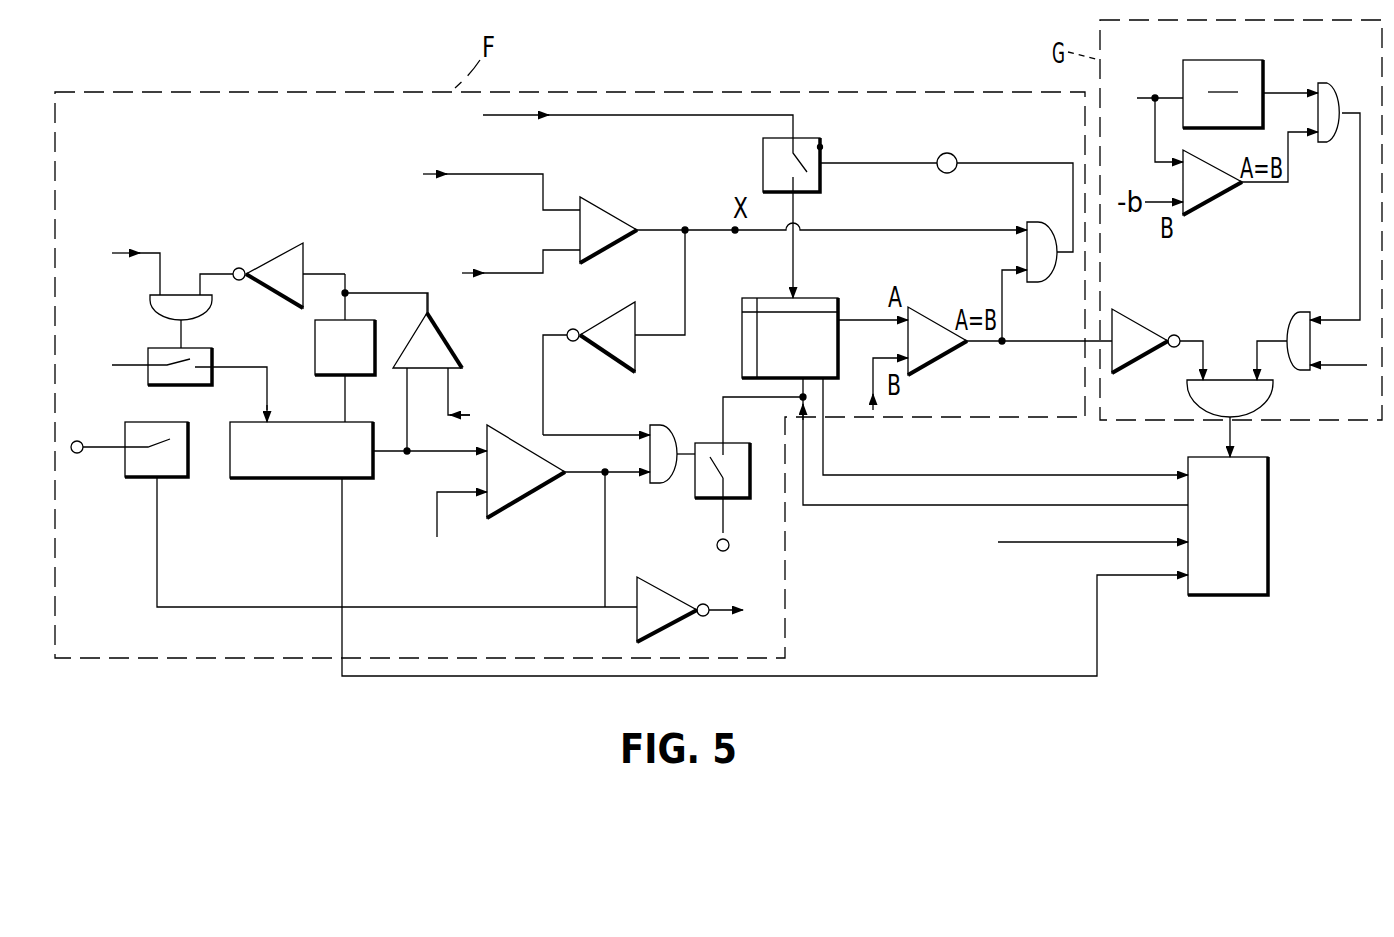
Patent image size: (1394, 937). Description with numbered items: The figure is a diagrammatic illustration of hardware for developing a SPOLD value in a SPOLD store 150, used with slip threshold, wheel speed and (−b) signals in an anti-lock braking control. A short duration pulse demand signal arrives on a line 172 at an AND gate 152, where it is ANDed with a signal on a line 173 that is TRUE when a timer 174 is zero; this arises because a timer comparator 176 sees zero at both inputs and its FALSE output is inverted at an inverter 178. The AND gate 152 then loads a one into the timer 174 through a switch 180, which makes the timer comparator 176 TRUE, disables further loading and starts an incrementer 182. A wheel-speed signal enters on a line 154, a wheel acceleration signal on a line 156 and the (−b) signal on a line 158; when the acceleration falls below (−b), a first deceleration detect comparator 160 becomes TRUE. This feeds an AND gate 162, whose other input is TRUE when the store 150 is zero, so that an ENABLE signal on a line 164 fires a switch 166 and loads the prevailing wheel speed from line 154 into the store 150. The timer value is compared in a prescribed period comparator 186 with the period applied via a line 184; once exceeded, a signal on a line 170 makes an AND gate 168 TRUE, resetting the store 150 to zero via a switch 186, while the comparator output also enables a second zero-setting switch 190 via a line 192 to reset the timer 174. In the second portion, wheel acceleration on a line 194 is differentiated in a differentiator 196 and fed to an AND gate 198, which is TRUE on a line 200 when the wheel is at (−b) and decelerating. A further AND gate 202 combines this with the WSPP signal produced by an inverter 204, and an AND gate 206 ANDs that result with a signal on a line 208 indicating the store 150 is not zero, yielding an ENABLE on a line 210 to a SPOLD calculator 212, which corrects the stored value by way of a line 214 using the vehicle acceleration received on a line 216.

The SPOLD store 150 is at (815, 352).
The AND gate 152 is at (158, 310).
The line 154 is at (693, 118).
The line 156 is at (543, 196).
The line 158 is at (497, 268).
The first deceleration detect comparator 160 is at (600, 217).
The AND gate 162 is at (1040, 272).
The line 164 is at (873, 168).
The switch 166 is at (820, 147).
The AND gate 168 is at (660, 427).
The line 170 is at (572, 478).
The line 172 is at (155, 278).
The line 173 is at (220, 270).
The timer 174 is at (319, 463).
The timer comparator 176 is at (450, 345).
The inverter 178 is at (307, 257).
The switch 180 is at (150, 380).
The incrementer 182 is at (363, 363).
The line 184 is at (435, 520).
The prescribed period comparator 186 is at (529, 481).
The second zero-setting switch 190 is at (143, 470).
The line 192 is at (252, 605).
The line 194 is at (1147, 90).
The differentiator 196 is at (1263, 62).
The AND gate 198 is at (1328, 135).
The line 200 is at (1360, 228).
The AND gate 202 is at (1292, 314).
The inverter 204 is at (653, 627).
The AND gate 206 is at (1273, 390).
The line 208 is at (1195, 340).
The line 210 is at (1232, 432).
The SPOLD calculator 212 is at (1246, 538).
The line 214 is at (932, 508).
The line 216 is at (1055, 545).